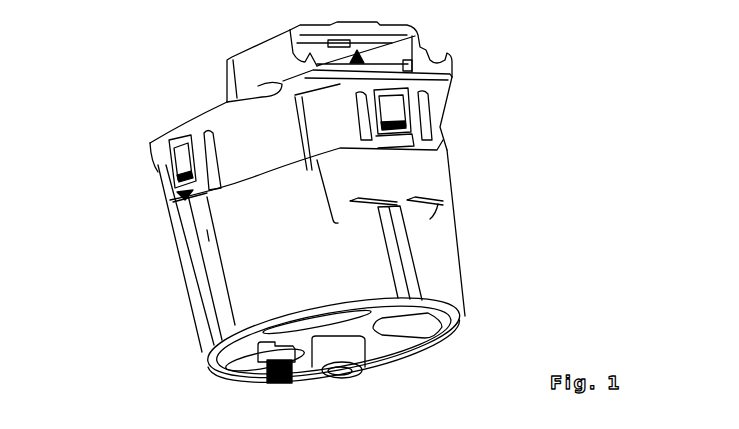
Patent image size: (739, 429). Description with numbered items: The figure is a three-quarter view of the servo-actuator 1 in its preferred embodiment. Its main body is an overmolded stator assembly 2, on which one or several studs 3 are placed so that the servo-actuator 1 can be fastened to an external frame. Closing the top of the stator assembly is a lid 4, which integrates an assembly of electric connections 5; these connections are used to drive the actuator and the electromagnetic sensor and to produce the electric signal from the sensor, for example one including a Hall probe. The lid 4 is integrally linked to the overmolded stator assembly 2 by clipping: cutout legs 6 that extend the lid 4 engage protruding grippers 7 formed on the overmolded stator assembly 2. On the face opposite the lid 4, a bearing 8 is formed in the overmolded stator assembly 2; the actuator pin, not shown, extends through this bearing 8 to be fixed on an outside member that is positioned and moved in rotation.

The servo-actuator 1 is at (105, 91).
The overmolded stator assembly 2 is at (194, 277).
The stud 3 is at (271, 386).
The lid 4 is at (199, 120).
The assembly of electric connections 5 is at (405, 30).
The cutout leg 6 is at (189, 196).
The protruding gripper 7 is at (187, 174).
The bearing 8 is at (364, 366).